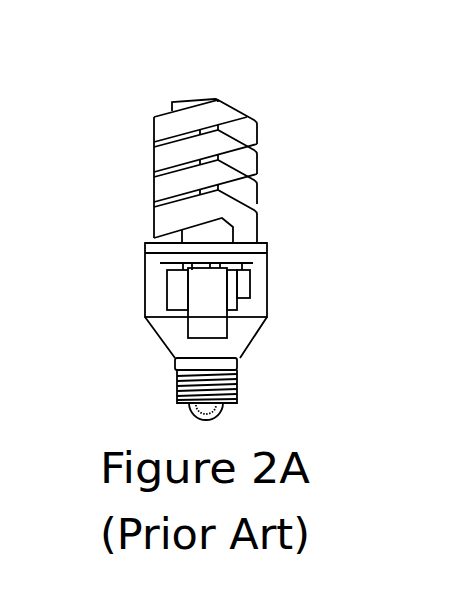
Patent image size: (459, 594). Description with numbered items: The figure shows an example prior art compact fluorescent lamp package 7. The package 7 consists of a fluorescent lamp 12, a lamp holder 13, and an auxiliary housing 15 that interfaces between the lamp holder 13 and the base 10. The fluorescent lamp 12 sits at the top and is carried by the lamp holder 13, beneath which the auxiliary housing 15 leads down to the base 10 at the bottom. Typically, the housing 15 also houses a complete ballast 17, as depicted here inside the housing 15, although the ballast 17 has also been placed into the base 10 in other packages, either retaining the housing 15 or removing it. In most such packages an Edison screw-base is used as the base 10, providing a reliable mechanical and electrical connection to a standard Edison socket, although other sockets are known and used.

The compact fluorescent lamp package 7 is at (226, 59).
The fluorescent lamp 12 is at (172, 131).
The lamp holder 13 is at (173, 250).
The ballast 17 is at (150, 279).
The auxiliary housing 15 is at (145, 307).
The base 10 is at (178, 380).